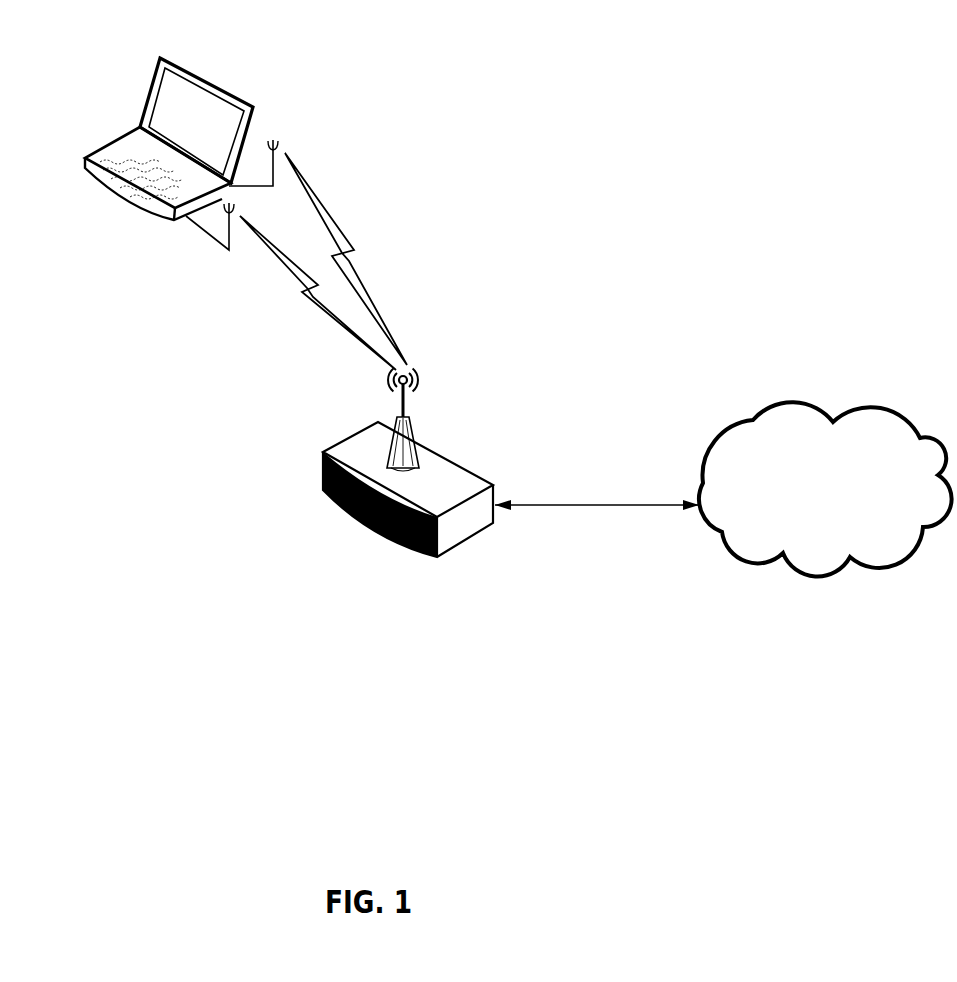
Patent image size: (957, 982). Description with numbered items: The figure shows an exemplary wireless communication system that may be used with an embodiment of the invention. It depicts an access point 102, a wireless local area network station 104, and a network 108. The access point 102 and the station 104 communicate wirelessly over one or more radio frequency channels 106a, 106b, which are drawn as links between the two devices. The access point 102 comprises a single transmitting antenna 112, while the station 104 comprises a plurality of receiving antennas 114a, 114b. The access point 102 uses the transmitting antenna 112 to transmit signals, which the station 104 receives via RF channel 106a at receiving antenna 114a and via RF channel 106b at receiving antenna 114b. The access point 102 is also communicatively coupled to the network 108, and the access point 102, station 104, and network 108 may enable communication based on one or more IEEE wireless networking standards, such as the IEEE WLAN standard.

The access point 102 is at (472, 466).
The WLAN station 104 is at (152, 78).
The RF channel 106a is at (318, 303).
The RF channel 106b is at (348, 244).
The network 108 is at (758, 413).
The transmitting antenna 112 is at (400, 404).
The receiving antenna 114a is at (222, 241).
The receiving antenna 114b is at (279, 147).